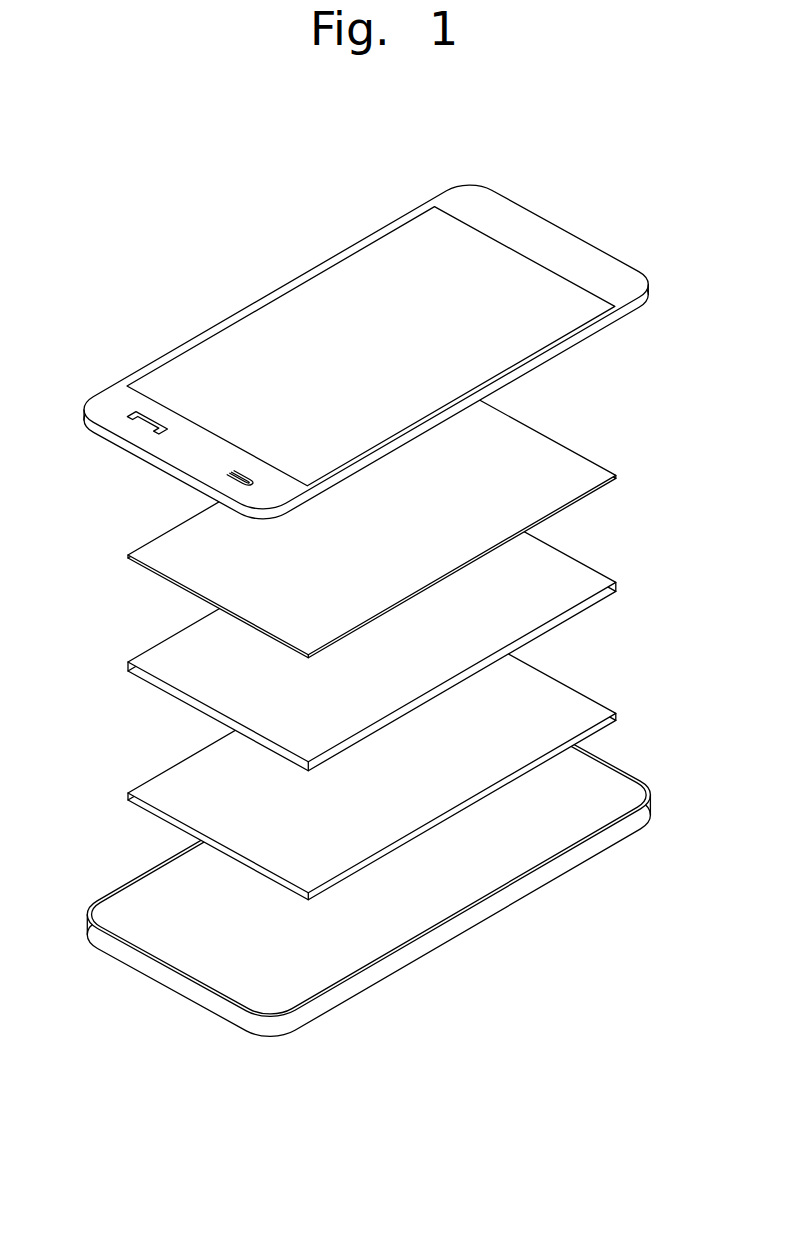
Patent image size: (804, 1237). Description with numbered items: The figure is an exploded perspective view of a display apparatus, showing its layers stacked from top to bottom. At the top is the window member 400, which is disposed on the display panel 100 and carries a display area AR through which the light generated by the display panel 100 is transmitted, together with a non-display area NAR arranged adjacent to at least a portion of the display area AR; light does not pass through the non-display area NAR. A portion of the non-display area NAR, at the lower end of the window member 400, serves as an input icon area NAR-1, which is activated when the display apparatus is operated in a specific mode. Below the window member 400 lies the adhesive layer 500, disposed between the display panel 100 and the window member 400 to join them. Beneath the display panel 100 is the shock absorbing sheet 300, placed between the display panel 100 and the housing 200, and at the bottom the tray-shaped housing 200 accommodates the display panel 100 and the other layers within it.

The display panel 100 is at (583, 582).
The housing 200 is at (567, 860).
The shock absorbing sheet 300 is at (583, 712).
The window member 400 is at (593, 270).
The adhesive layer 500 is at (583, 472).
The display area AR is at (367, 272).
The non-display area NAR is at (521, 227).
The input icon area NAR-1 is at (118, 396).